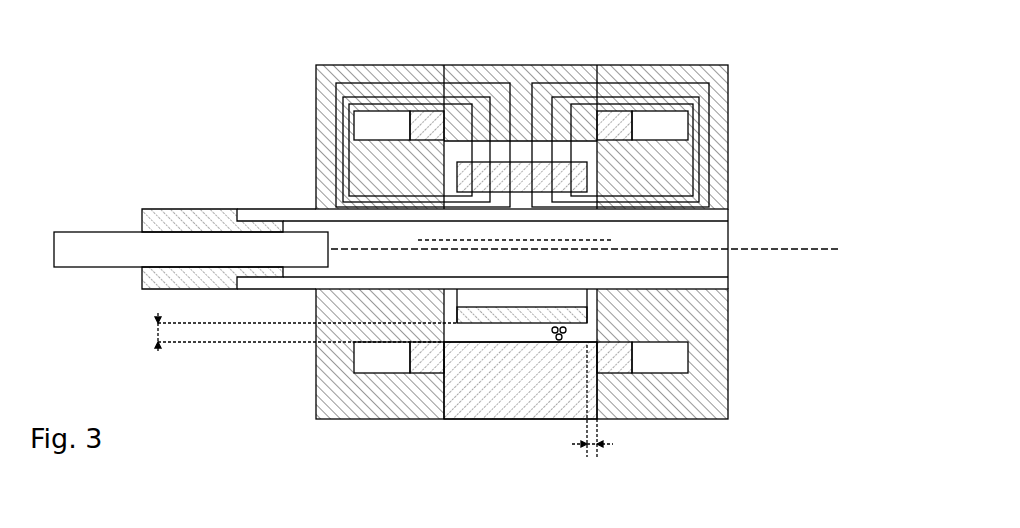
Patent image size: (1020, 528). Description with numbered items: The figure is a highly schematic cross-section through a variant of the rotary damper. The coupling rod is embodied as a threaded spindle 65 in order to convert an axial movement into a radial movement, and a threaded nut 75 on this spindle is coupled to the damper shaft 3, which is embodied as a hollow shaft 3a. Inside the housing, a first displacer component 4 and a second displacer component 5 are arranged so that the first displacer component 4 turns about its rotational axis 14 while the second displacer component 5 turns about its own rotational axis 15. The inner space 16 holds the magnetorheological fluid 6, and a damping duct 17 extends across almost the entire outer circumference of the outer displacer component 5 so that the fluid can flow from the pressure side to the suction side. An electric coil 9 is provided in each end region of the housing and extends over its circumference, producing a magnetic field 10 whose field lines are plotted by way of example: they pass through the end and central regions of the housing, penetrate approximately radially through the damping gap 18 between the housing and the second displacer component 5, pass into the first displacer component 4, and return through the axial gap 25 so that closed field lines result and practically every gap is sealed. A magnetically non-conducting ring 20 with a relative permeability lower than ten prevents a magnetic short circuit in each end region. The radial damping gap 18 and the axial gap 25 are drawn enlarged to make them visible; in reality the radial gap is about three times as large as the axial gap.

The damper shaft 3 is at (397, 222).
The hollow shaft 3a is at (742, 232).
The displacer component 4 is at (508, 290).
The displacer component 5 is at (542, 315).
The magnetorheological fluid 6 is at (558, 342).
The electric coil 9 is at (386, 120).
The magnetic field 10 is at (552, 82).
The rotational axis of displacer component 14 is at (395, 250).
The rotational axis of displacer component 15 is at (560, 240).
The inner space 16 is at (460, 338).
The damping duct 17 is at (500, 338).
The damping gap 18 is at (158, 331).
The ring 20 is at (430, 120).
The axial gap 25 is at (594, 448).
The threaded spindle 65 is at (87, 247).
The threaded nut 75 is at (218, 222).